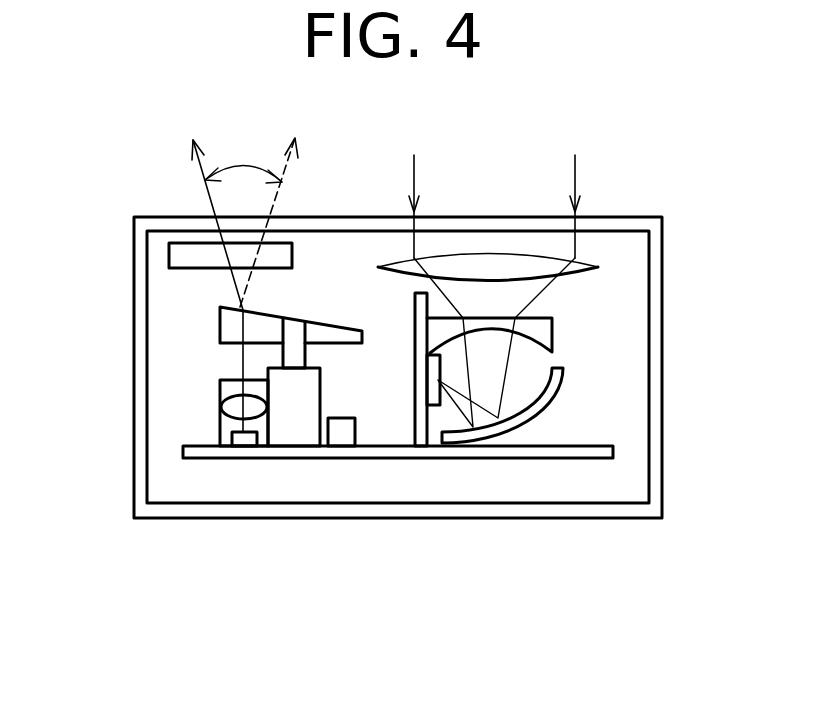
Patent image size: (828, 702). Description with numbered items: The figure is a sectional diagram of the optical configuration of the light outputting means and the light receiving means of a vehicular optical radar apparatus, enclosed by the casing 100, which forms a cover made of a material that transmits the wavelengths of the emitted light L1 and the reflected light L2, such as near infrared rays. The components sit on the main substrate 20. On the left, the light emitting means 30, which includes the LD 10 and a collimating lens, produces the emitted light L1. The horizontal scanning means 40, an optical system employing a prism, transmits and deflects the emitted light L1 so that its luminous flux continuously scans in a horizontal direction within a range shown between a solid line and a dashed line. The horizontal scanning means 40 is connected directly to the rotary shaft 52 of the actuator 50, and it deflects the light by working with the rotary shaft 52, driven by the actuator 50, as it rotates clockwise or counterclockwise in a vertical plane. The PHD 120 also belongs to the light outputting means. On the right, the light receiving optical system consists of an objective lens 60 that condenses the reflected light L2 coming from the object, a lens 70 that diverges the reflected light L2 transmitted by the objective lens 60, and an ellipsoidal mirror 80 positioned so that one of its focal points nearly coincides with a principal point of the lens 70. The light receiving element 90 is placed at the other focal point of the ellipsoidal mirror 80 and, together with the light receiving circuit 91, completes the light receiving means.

The LD 10 is at (232, 440).
The main substrate 20 is at (513, 460).
The light emitting means 30 is at (220, 390).
The horizontal scanning means 40 is at (220, 320).
The actuator 50 is at (297, 428).
The rotary shaft 52 is at (293, 330).
The objective lens 60 is at (512, 263).
The lens 70 is at (542, 330).
The ellipsoidal mirror 80 is at (553, 378).
The light receiving element 90 is at (437, 393).
The light receiving circuit 91 is at (415, 420).
The casing 100 is at (593, 519).
The PHD 120 is at (345, 433).
The emitted light L1 is at (208, 197).
The reflected light L2 is at (414, 187).